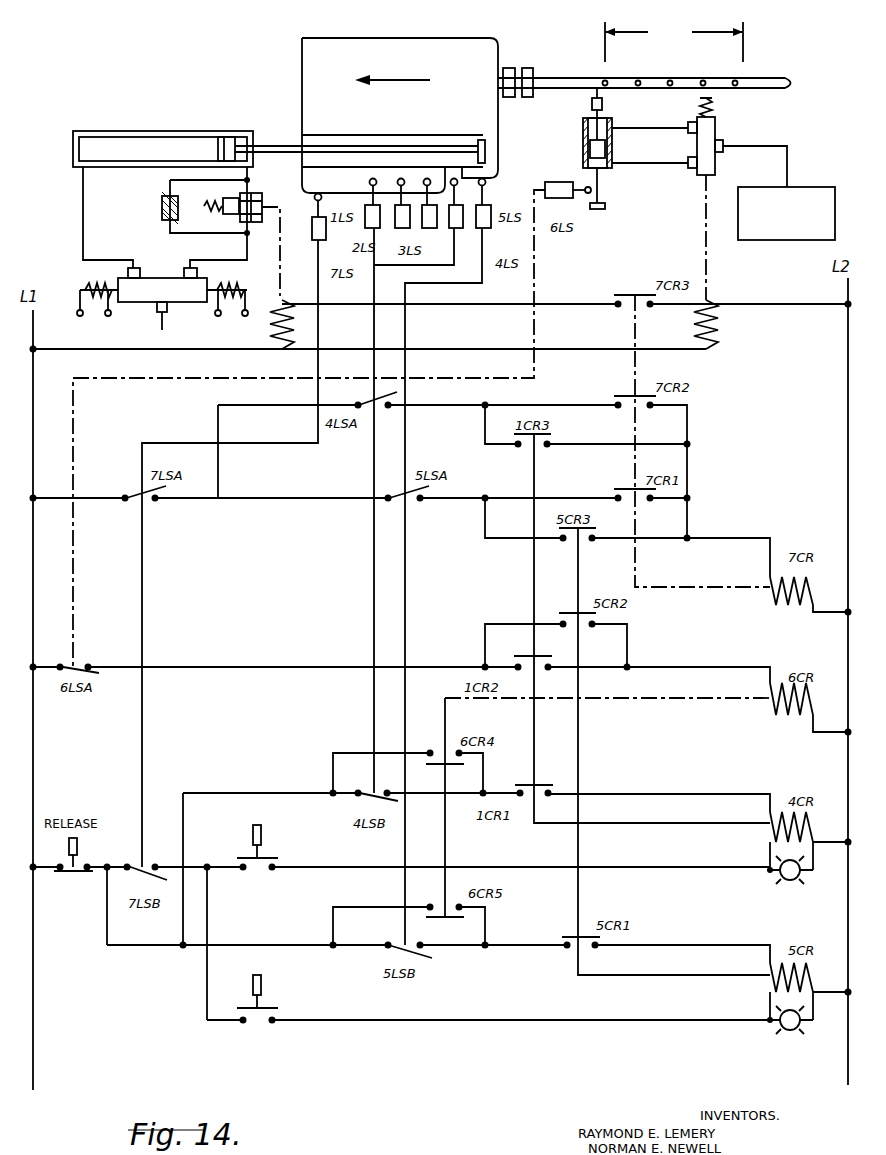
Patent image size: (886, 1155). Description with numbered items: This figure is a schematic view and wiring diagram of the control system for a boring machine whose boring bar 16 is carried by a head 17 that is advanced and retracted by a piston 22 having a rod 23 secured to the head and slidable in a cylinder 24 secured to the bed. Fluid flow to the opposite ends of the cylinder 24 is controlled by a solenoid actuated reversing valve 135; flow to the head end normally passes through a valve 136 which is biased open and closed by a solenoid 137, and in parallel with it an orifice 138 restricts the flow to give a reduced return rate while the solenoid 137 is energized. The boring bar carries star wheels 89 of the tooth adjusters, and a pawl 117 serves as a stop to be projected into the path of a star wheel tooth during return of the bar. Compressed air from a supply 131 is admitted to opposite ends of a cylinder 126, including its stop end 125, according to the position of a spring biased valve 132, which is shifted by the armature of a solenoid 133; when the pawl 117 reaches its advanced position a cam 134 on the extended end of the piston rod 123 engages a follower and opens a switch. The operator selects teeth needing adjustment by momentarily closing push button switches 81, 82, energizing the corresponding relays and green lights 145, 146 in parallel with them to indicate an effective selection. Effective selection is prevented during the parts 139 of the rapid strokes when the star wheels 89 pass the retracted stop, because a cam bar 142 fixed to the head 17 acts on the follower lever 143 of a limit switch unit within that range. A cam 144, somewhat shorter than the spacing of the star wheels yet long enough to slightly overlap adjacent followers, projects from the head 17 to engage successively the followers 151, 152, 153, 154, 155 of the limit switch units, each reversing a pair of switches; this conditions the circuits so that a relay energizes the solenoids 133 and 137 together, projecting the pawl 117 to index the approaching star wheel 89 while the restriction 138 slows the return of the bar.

The boring bar 16 is at (548, 78).
The head 17 is at (318, 45).
The piston 22 is at (226, 137).
The rod 23 is at (271, 146).
The cylinder 24 is at (115, 131).
The switch 81 is at (258, 868).
The switch 82 is at (258, 1021).
The star wheel 89 is at (603, 80).
The pawl 117 is at (604, 103).
The piston rod 123 is at (583, 130).
The cylinder lower port 125 is at (611, 168).
The cylinder 126 is at (606, 150).
The supply 131 is at (788, 240).
The spring biased valve 132 is at (716, 134).
The solenoid 133 is at (716, 336).
The cam 134 is at (600, 212).
The solenoid actuated reversing valve 135 is at (135, 302).
The valve 136 is at (232, 218).
The solenoid 137 is at (278, 345).
The orifice 138 is at (162, 206).
The parts of the rapid traverse strokes 139 is at (674, 42).
The cam bar 142 is at (302, 180).
The follower lever 143 is at (320, 194).
The cam 144 is at (490, 166).
The green light 145 is at (783, 880).
The green light 146 is at (783, 1030).
The follower 151 is at (374, 178).
The follower 152 is at (402, 178).
The follower 153 is at (428, 178).
The follower 154 is at (455, 178).
The follower 155 is at (483, 178).